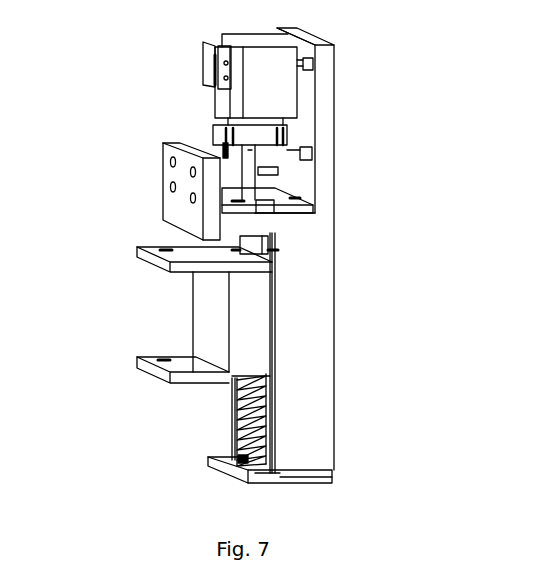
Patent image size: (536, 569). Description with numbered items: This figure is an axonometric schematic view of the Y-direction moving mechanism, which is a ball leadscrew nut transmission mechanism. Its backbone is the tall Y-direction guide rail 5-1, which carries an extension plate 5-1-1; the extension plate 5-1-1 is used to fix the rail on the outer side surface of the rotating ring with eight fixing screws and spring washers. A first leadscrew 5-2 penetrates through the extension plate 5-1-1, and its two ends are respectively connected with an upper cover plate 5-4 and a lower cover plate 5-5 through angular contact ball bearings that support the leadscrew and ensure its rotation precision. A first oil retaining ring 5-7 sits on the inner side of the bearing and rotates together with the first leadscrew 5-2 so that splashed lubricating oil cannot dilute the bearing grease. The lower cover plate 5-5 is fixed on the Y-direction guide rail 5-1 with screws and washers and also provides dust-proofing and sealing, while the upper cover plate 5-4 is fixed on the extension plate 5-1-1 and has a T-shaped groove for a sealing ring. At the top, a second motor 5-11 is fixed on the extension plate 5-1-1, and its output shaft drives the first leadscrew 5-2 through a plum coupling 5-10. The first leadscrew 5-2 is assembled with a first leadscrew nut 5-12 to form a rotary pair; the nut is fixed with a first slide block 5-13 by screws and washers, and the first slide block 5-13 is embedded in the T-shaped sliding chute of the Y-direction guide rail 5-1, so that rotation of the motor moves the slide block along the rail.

The Y-direction guide rail 5-1 is at (310, 332).
The extension plate 5-1-1 is at (173, 173).
The plum coupling 5-10 is at (210, 148).
The second motor 5-11 is at (212, 72).
The first leadscrew nut 5-12 is at (203, 245).
The first slide block 5-13 is at (210, 332).
The first leadscrew 5-2 is at (230, 410).
The upper cover plate 5-4 is at (282, 210).
The lower cover plate 5-5 is at (288, 477).
The first oil retaining ring 5-7 is at (230, 457).